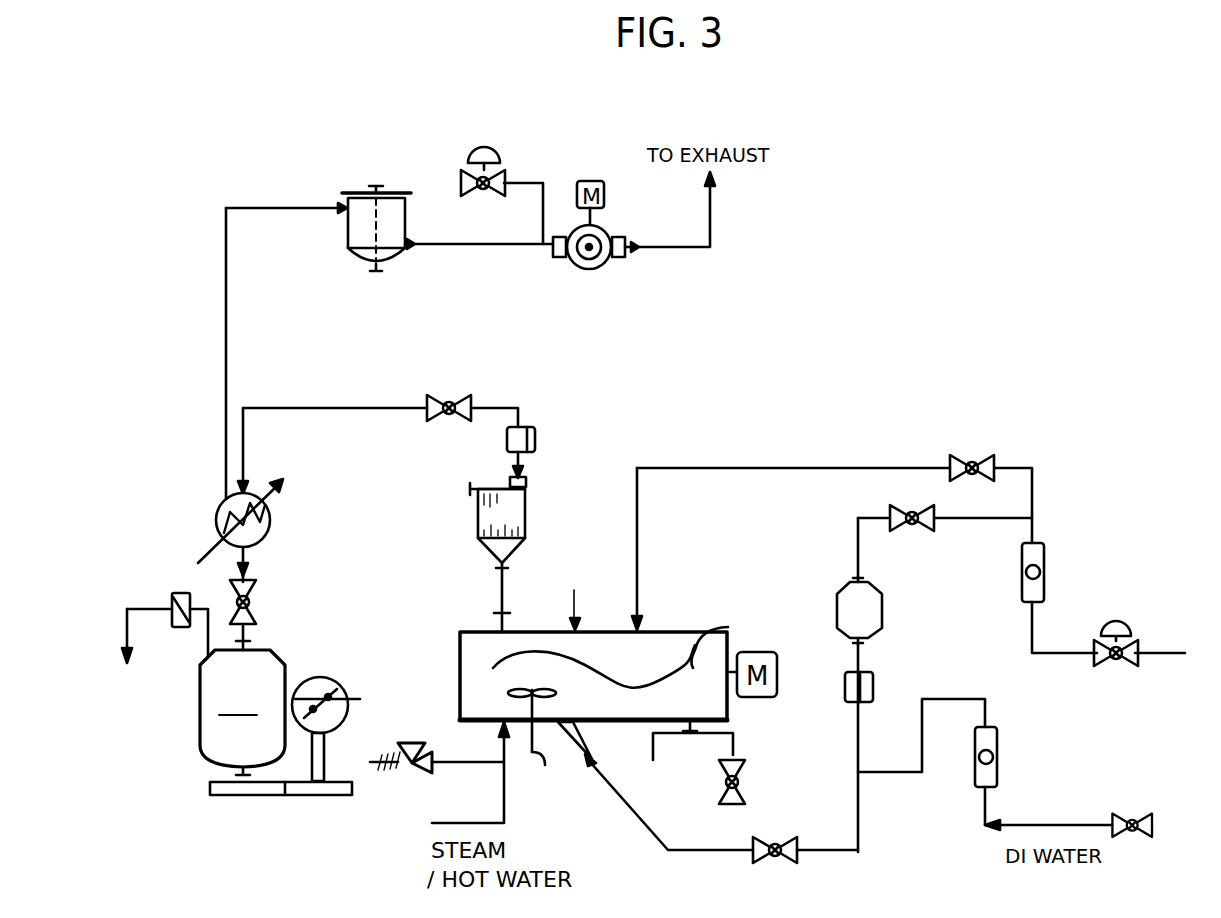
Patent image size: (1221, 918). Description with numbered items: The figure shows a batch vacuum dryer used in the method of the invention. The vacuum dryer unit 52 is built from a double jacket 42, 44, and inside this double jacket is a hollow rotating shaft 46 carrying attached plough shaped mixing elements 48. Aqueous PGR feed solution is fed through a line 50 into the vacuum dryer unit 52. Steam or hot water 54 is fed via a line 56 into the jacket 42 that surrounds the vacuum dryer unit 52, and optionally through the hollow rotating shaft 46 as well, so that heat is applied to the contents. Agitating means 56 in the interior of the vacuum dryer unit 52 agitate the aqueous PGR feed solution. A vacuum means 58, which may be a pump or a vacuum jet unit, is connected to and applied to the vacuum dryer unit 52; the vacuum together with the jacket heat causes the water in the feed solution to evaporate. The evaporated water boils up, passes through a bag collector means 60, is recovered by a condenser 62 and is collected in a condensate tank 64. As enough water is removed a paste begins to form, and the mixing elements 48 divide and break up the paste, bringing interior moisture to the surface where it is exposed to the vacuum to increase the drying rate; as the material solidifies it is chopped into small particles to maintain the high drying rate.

The jacket 42 is at (460, 680).
The double jacket 44 is at (500, 647).
The hollow rotating shaft 46 is at (536, 774).
The plough shaped mixing elements 48 is at (541, 675).
The line 50 is at (727, 468).
The vacuum dryer unit 52 is at (576, 596).
The steam or hot water 54 is at (1146, 838).
The line 56 is at (984, 797).
The vacuum means 58 is at (512, 163).
The bag collector means 60 is at (527, 508).
The condenser 62 is at (268, 491).
The condensate tank 64 is at (242, 712).